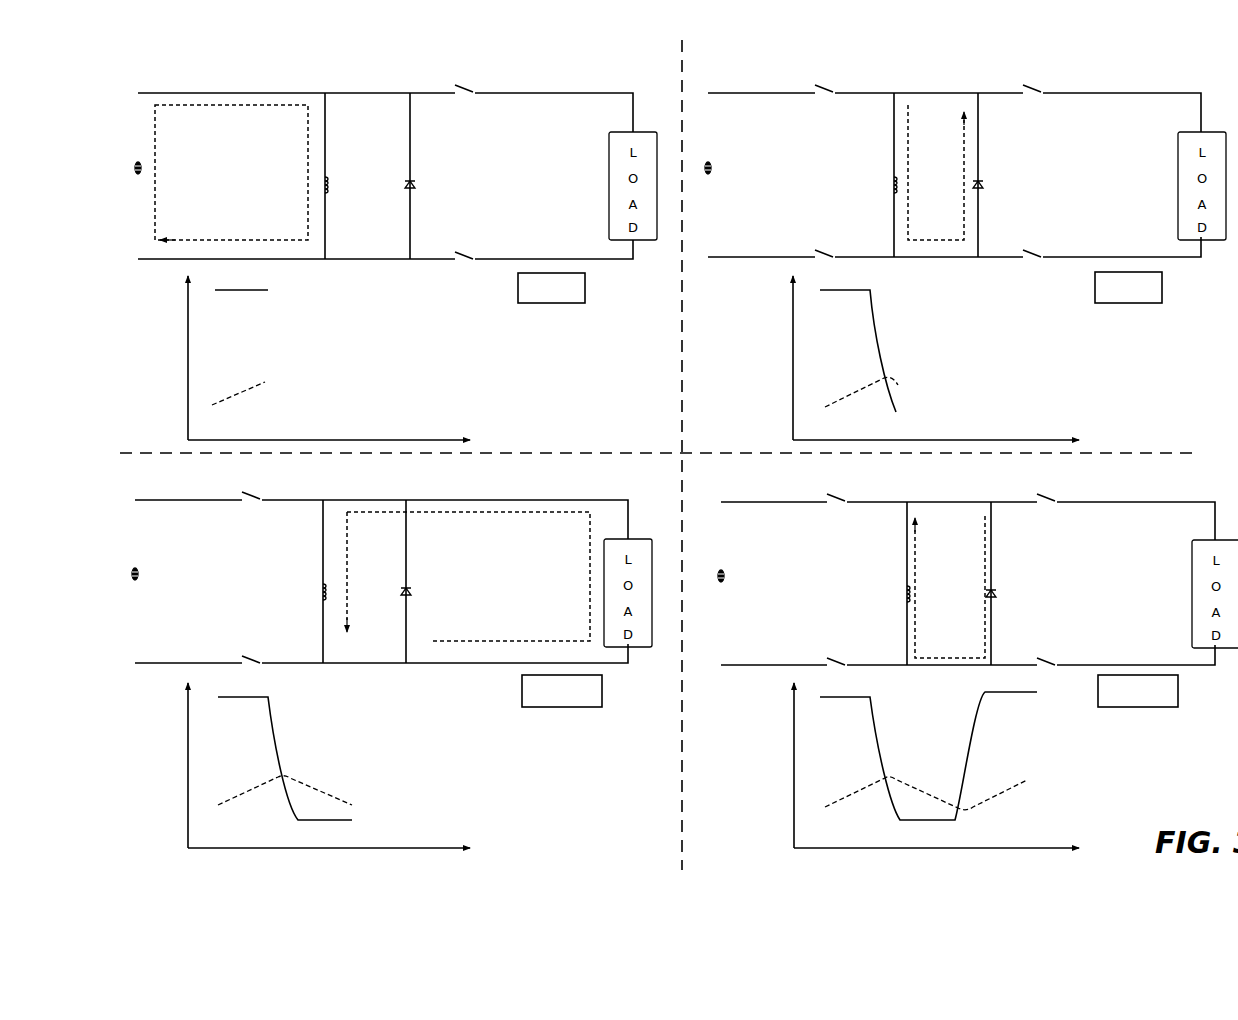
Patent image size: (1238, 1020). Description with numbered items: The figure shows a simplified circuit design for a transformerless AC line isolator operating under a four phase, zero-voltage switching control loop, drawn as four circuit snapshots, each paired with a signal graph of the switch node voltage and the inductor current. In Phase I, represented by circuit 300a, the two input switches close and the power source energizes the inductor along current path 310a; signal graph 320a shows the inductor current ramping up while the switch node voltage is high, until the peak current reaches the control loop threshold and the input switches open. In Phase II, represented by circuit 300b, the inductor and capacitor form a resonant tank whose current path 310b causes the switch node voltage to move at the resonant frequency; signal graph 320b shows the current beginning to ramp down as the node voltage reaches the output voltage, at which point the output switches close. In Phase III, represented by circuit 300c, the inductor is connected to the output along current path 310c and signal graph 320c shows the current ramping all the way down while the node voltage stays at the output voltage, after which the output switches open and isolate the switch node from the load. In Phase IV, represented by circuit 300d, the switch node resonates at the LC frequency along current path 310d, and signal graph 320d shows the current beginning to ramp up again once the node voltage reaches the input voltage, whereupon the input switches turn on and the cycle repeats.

The circuit 300a is at (203, 86).
The circuit 300b is at (770, 78).
The circuit 300c is at (190, 490).
The circuit 300d is at (813, 494).
The current path 310a is at (268, 193).
The current path 310b is at (913, 148).
The current path 310c is at (336, 557).
The current path 310d is at (918, 572).
The signal graph 320a is at (308, 338).
The signal graph 320b is at (915, 343).
The signal graph 320c is at (340, 752).
The signal graph 320d is at (1032, 743).